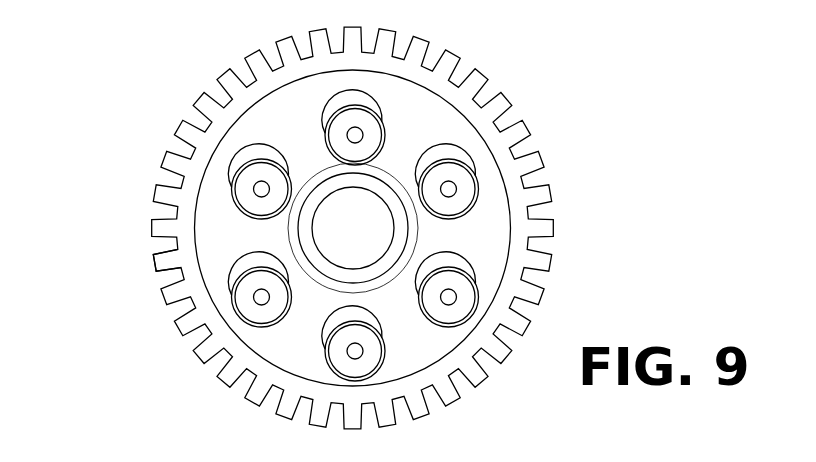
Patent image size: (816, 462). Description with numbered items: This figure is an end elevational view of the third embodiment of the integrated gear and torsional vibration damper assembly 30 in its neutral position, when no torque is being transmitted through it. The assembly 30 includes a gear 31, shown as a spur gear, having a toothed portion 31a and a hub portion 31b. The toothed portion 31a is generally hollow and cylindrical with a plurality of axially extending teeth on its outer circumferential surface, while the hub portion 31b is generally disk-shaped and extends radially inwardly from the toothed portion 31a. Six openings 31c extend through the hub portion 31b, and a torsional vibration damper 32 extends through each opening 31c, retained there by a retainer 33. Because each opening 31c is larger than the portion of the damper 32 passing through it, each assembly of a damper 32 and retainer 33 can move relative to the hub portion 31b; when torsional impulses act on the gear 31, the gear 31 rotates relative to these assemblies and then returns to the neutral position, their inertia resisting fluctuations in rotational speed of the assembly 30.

The integrated gear and torsional vibration damper assembly 30 is at (535, 63).
The gear 31 is at (177, 175).
The toothed portion 31a is at (155, 265).
The hub portion 31b is at (282, 345).
The openings 31c is at (325, 107).
The torsional vibration damper 32 is at (452, 193).
The retainer 33 is at (368, 354).